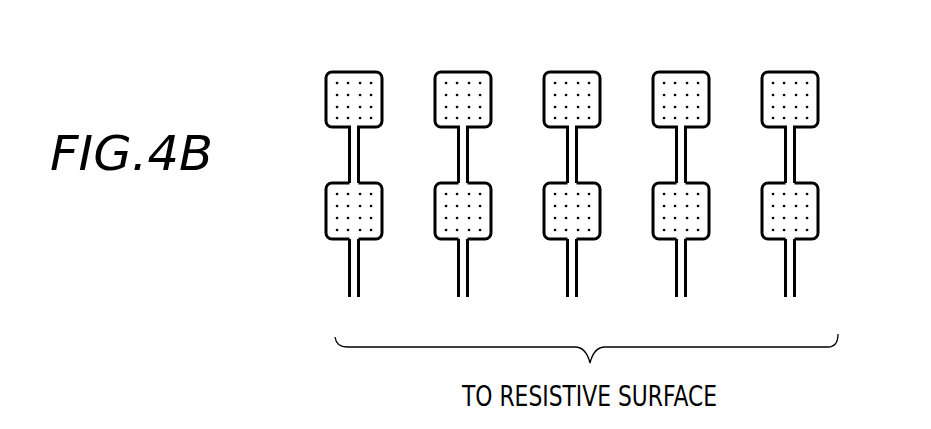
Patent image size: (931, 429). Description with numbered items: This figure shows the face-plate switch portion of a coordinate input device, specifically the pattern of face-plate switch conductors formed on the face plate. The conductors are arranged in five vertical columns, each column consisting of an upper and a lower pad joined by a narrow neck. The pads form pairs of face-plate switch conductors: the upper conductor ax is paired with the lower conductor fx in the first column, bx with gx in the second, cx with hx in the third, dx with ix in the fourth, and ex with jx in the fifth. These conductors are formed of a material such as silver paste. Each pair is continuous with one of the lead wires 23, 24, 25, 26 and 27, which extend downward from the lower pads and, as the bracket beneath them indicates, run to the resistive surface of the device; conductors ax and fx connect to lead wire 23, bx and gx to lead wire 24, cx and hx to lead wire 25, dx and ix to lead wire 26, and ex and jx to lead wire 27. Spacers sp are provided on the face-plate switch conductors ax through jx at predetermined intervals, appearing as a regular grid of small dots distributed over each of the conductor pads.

The face-plate switch conductor ax is at (353, 72).
The face-plate switch conductor bx is at (462, 72).
The face-plate switch conductor cx is at (571, 72).
The face-plate switch conductor dx is at (680, 72).
The face-plate switch conductor ex is at (789, 72).
The face-plate switch conductor fx is at (329, 241).
The face-plate switch conductor gx is at (438, 241).
The face-plate switch conductor hx is at (547, 241).
The face-plate switch conductor ix is at (656, 241).
The face-plate switch conductor jx is at (767, 241).
The spacer sp is at (335, 104).
The lead wire 23 is at (359, 275).
The lead wire 24 is at (468, 275).
The lead wire 25 is at (577, 275).
The lead wire 26 is at (686, 275).
The lead wire 27 is at (795, 275).